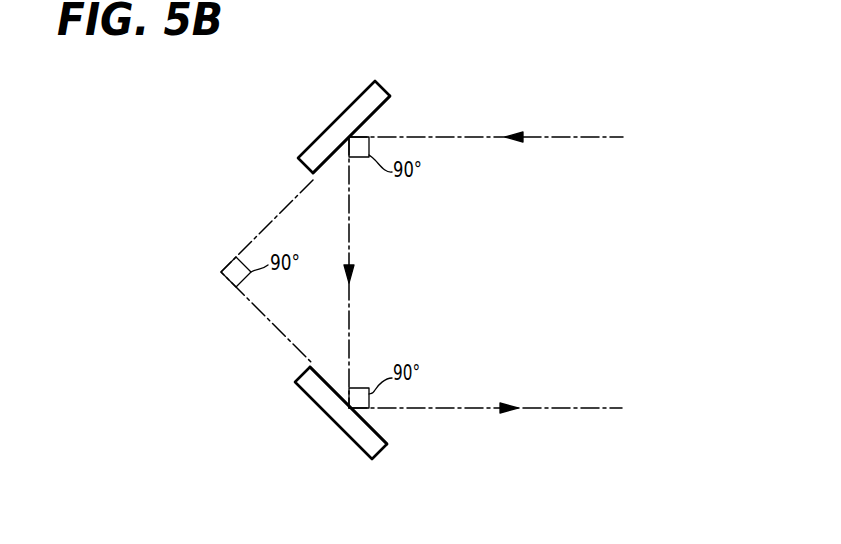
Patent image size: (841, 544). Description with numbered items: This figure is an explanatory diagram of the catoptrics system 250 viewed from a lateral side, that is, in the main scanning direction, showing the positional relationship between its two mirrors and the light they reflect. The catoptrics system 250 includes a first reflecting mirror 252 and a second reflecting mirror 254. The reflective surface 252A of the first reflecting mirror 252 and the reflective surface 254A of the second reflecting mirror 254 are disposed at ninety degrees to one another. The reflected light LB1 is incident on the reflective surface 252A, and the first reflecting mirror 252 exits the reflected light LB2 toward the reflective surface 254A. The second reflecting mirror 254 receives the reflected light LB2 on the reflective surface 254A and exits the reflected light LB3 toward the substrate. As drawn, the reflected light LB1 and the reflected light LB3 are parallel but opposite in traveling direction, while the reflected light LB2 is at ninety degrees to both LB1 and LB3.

The catoptrics system 250 is at (225, 215).
The first reflecting mirror 252 is at (332, 121).
The reflective surface of the first reflecting mirror 252A is at (380, 106).
The second reflecting mirror 254 is at (333, 423).
The reflective surface of the second reflecting mirror 254A is at (327, 380).
The reflected light LB1 is at (478, 136).
The reflected light LB2 is at (352, 232).
The reflected light LB3 is at (472, 410).